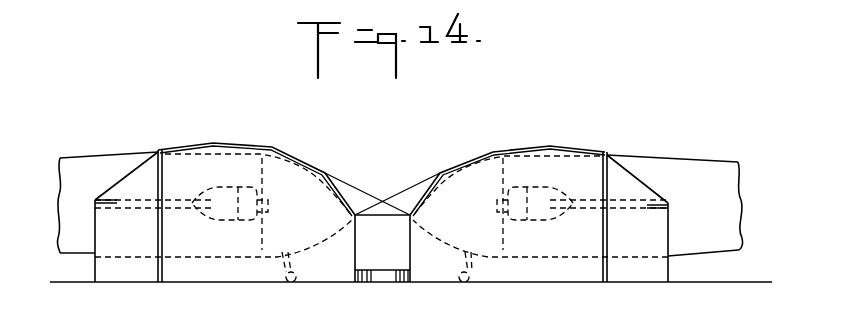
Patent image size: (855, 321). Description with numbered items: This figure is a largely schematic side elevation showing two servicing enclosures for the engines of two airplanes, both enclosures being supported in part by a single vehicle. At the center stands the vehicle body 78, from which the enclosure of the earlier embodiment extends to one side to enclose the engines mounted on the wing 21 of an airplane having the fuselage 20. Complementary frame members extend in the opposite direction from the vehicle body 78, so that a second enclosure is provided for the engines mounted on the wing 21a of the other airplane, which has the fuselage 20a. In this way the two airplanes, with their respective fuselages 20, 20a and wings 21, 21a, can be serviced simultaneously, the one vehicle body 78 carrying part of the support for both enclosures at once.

The fuselage 20 is at (660, 155).
The fuselage 20a is at (98, 155).
The wing 21 is at (587, 210).
The wing 21a is at (150, 207).
The vehicle body 78 is at (382, 257).